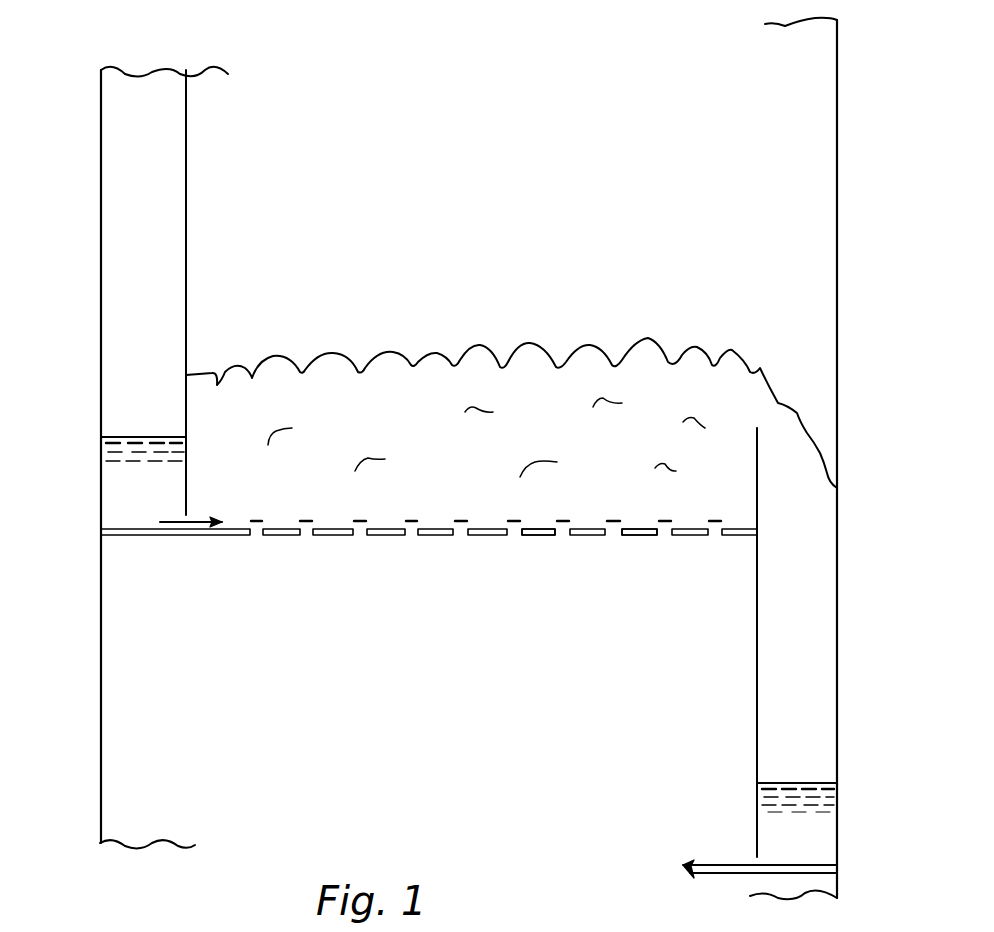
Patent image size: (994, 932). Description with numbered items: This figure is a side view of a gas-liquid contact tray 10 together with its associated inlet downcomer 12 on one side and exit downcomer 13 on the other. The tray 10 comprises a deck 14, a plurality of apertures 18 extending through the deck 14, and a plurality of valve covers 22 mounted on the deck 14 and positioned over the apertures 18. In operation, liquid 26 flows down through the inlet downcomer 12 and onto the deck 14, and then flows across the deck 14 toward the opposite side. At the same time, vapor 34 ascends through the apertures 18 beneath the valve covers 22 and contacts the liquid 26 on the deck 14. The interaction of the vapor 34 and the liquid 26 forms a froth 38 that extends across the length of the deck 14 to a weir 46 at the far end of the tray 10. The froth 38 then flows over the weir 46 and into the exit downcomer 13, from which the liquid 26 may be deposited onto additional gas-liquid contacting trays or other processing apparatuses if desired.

The gas-liquid contact tray 10 is at (487, 538).
The inlet downcomer 12 is at (176, 272).
The exit downcomer 13 is at (768, 673).
The deck 14 is at (536, 540).
The apertures 18 is at (614, 539).
The valve covers 22 is at (712, 523).
The liquid 26 is at (118, 497).
The vapor 34 is at (257, 539).
The froth 38 is at (345, 372).
The weir 46 is at (757, 428).